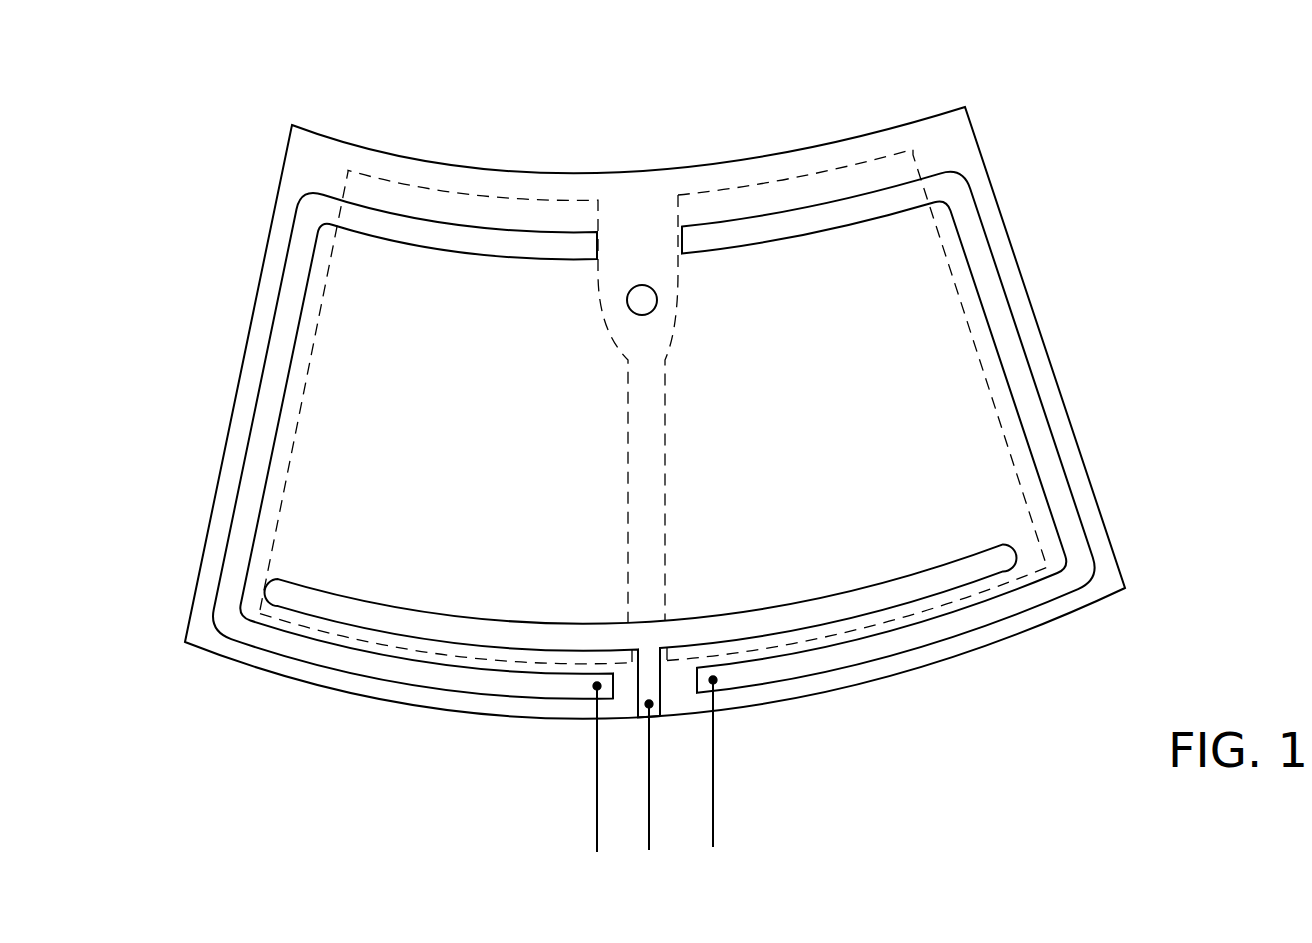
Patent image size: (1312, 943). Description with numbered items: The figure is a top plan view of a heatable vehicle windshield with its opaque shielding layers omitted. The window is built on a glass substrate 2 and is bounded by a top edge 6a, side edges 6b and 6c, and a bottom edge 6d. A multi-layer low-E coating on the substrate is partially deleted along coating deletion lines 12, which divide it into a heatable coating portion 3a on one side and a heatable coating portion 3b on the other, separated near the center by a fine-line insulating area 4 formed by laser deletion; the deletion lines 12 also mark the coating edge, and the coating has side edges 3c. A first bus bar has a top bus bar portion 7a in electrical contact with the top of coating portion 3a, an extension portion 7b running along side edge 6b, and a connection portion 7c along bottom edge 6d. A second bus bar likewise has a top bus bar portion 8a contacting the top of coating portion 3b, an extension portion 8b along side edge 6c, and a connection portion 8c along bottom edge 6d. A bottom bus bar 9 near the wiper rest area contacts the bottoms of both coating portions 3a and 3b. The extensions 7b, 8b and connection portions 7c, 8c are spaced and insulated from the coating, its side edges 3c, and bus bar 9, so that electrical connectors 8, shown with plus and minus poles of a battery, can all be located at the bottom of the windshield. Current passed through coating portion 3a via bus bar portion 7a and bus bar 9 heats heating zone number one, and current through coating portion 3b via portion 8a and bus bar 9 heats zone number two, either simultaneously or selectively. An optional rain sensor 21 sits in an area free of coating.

The first glass substrate 2 is at (400, 308).
The heatable coating portion 3a is at (438, 345).
The heatable coating portion 3b is at (893, 272).
The side edges of coating 3c is at (283, 488).
The insulating area 4 is at (258, 803).
The top edge 6a is at (623, 170).
The side edge 6b is at (237, 380).
The side edge 6c is at (1017, 257).
The bottom edge 6d is at (858, 688).
The top bus bar portion 7a is at (475, 237).
The extension portion 7b is at (237, 527).
The connection portion 7c is at (518, 685).
The electrical connectors 8 is at (598, 777).
The top bus bar portion 8a is at (843, 217).
The extension portion 8b is at (1007, 322).
The connection portion 8c is at (912, 645).
The bottom bus bar 9 is at (443, 632).
The coating deletion line 12 is at (293, 438).
The rain sensor 21 is at (642, 285).